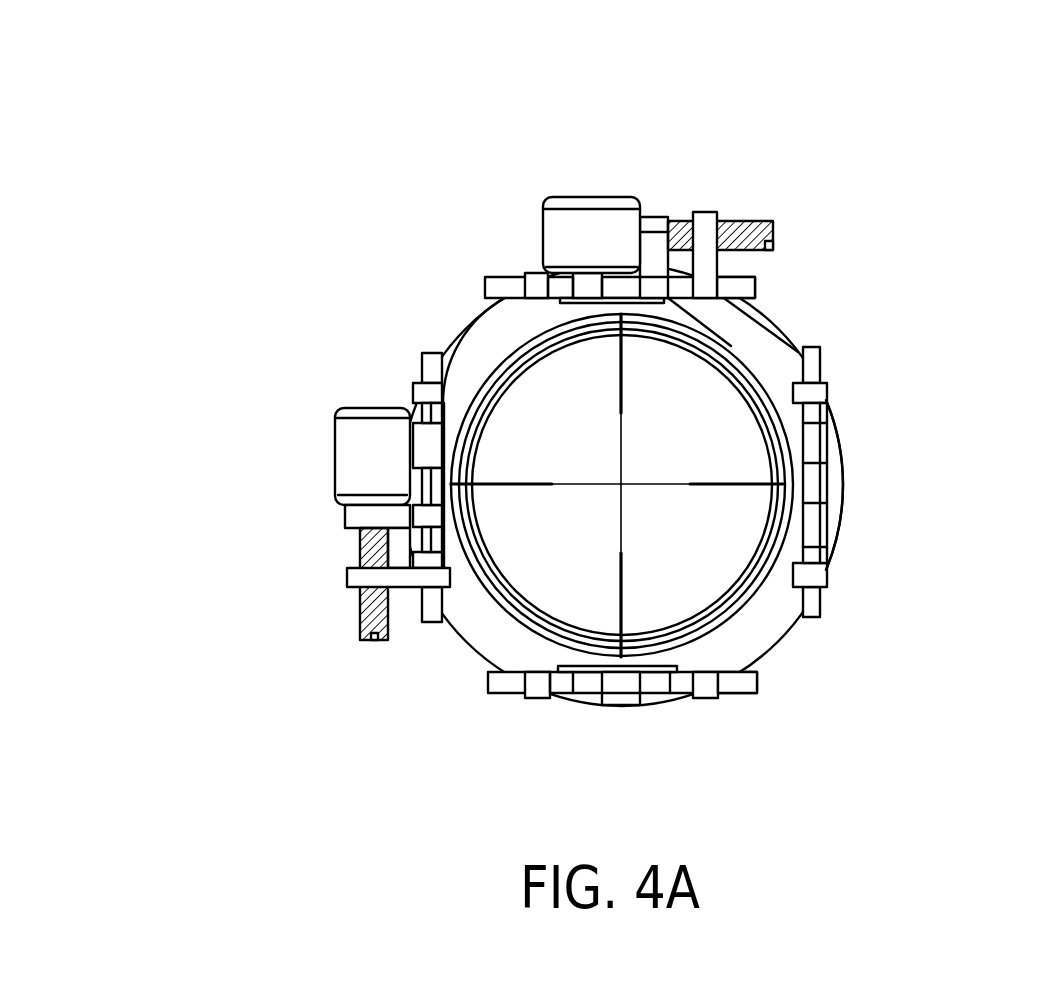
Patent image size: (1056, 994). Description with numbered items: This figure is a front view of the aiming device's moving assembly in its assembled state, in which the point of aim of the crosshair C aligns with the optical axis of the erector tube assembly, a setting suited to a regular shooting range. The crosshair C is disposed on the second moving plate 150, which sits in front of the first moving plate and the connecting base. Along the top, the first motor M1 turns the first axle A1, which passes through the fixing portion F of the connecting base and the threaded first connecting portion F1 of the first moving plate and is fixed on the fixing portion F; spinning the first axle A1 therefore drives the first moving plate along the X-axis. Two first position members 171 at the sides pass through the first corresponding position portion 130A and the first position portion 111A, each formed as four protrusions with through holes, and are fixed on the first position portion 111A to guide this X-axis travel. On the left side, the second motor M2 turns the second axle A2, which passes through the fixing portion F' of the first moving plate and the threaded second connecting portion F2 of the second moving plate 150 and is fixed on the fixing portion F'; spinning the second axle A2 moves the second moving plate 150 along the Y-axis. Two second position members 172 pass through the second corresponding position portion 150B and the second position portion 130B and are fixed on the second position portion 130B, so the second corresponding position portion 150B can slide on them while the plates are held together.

The second moving plate 150 is at (765, 637).
The second corresponding position portion 150B is at (433, 447).
The first corresponding position portion 130A is at (702, 288).
The second position portion 130B is at (822, 444).
The first position portion 111A is at (690, 314).
The first position members 171 is at (752, 288).
The second position members 172 is at (433, 367).
The crosshair C is at (628, 580).
The first motor M1 is at (597, 212).
The second motor M2 is at (350, 460).
The fixing portion F is at (654, 180).
The first connecting portion F1 is at (704, 210).
The second connecting portion F2 is at (348, 578).
The fixing portion F' is at (311, 530).
The first axle A1 is at (737, 222).
The second axle A2 is at (372, 605).